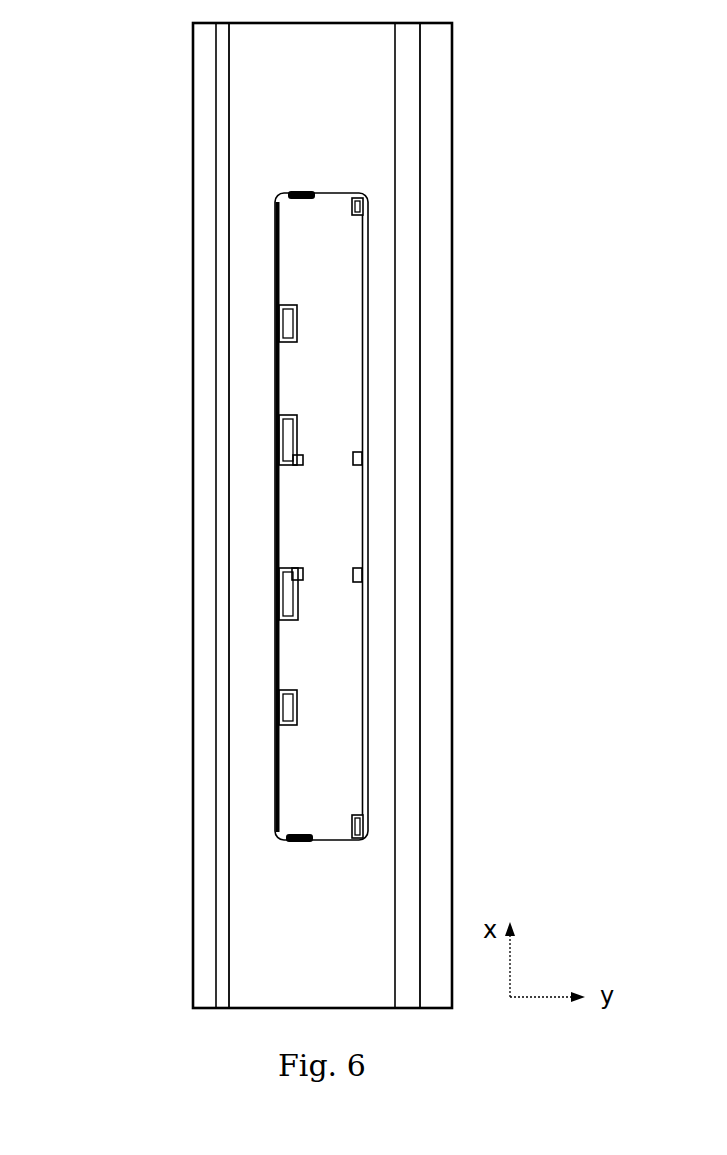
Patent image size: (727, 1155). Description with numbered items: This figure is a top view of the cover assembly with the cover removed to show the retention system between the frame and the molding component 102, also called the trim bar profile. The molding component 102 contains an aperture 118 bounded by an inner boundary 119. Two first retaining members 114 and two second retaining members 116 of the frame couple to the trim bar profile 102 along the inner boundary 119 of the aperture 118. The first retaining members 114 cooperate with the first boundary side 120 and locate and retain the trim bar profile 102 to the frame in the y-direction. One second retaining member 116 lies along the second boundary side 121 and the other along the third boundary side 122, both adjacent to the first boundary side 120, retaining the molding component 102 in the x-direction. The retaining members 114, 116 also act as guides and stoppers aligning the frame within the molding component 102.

The molding component 102 is at (274, 975).
The first retaining member 114 is at (275, 433).
The second retaining member 116 is at (300, 194).
The aperture 118 is at (340, 331).
The inner boundary 119 is at (372, 434).
The first boundary side 120 is at (275, 268).
The second boundary side 121 is at (330, 192).
The third boundary side 122 is at (352, 836).